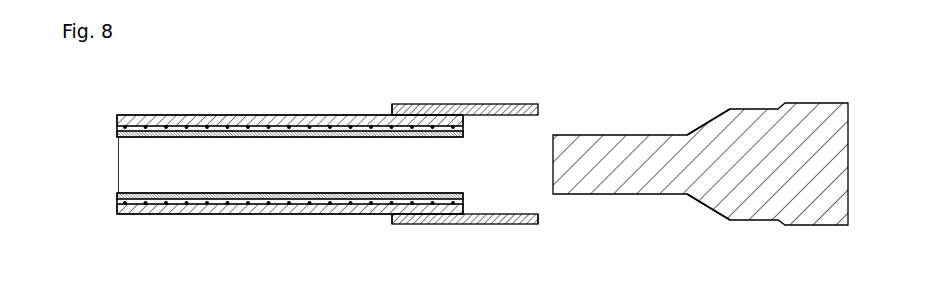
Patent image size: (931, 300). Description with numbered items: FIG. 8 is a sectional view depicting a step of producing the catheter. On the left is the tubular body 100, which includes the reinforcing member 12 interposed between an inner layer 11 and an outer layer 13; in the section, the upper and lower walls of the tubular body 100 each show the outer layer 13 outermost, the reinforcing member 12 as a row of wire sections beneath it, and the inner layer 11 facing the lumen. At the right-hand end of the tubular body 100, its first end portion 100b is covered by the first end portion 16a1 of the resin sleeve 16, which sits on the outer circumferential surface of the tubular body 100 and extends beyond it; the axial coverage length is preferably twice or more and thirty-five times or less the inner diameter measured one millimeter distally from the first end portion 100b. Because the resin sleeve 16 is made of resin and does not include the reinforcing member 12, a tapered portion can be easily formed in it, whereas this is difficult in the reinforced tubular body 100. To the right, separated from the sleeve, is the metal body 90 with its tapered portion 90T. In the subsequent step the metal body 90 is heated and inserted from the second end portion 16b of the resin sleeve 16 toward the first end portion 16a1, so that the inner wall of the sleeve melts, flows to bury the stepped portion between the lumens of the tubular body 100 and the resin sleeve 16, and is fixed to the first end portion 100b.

The tubular body 100 is at (233, 114).
The first end portion of the tubular body 100b is at (422, 104).
The outer layer 13 is at (117, 122).
The reinforcing member 12 is at (117, 127).
The inner layer 11 is at (117, 133).
The resin sleeve 16 is at (500, 104).
The second end portion of the resin sleeve 16b is at (405, 224).
The first end portion of the resin sleeve 16a1 is at (538, 224).
The metal body 90 is at (817, 225).
The tapered portion of the metal body 90T is at (712, 120).